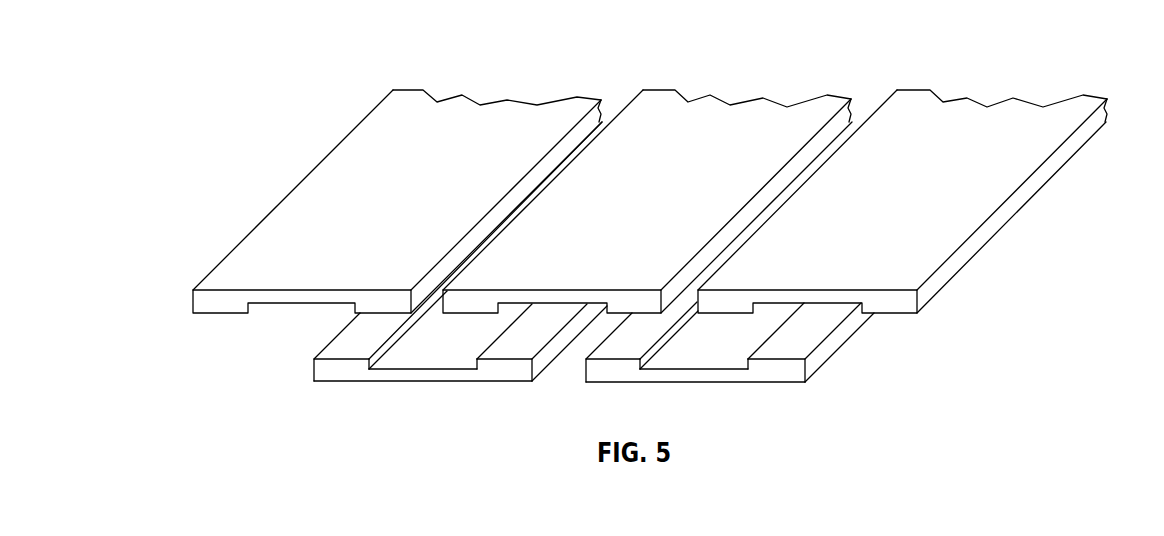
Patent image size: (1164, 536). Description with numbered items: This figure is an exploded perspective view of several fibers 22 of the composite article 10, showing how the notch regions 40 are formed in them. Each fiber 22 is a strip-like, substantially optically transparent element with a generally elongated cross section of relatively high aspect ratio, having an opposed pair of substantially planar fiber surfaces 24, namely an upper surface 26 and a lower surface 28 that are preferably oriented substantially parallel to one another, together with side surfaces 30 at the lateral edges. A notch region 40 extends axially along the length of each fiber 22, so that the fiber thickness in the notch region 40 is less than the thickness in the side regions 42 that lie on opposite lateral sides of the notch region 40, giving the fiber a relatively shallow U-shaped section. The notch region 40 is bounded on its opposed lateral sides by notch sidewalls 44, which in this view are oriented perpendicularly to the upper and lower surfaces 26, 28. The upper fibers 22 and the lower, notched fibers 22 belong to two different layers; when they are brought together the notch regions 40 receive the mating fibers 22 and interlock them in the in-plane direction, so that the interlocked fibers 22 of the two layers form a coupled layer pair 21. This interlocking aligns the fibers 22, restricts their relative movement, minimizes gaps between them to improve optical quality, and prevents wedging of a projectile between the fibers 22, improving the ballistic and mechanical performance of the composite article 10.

The composite article 10 is at (643, 227).
The coupled layer pair 21 is at (561, 271).
The fibers 22 is at (644, 236).
The fiber surfaces 24 is at (278, 228).
The upper surface 26 is at (217, 275).
The lower surface 28 is at (217, 315).
The side surfaces 30 is at (963, 250).
The notch region 40 is at (423, 370).
The side regions 42 is at (338, 363).
The notch sidewalls 44 is at (370, 361).